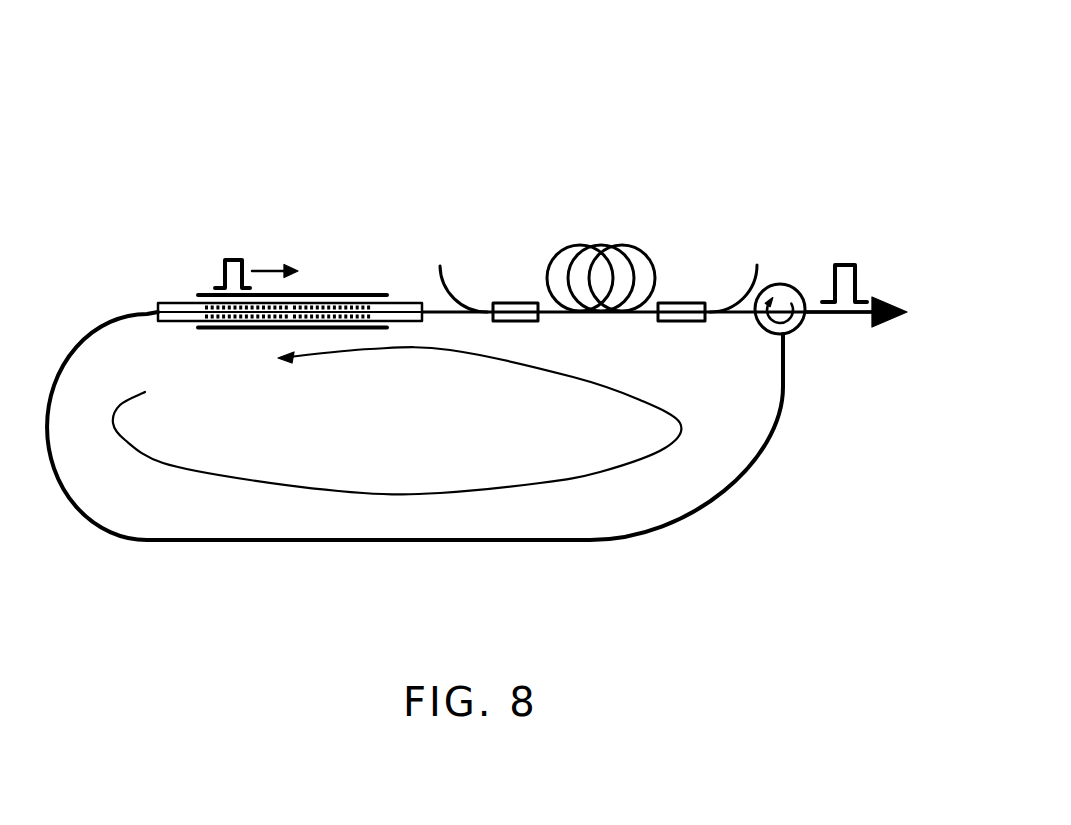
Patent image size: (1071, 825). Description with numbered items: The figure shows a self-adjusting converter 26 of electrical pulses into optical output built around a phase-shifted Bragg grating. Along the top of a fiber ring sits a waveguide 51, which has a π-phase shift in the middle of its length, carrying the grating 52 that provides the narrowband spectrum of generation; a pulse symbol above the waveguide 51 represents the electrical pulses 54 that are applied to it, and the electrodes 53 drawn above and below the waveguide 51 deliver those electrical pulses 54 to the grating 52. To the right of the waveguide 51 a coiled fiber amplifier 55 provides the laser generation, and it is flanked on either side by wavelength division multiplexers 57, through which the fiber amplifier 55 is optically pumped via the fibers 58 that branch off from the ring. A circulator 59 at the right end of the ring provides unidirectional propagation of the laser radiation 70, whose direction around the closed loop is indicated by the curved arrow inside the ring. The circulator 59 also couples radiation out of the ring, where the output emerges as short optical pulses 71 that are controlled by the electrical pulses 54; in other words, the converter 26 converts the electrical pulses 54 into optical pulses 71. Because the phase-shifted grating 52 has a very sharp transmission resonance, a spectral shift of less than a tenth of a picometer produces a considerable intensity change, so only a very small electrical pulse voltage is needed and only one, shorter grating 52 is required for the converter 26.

The converter 26 is at (283, 83).
The waveguide 51 is at (162, 294).
The grating 52 is at (361, 292).
The electrodes 53 is at (188, 296).
The electrical pulses 54 is at (255, 259).
The fiber amplifier 55 is at (649, 235).
The wavelength division multiplexers 57 is at (518, 289).
The fibers 58 is at (456, 244).
The circulator 59 is at (805, 278).
The laser radiation 70 is at (397, 420).
The optical pulses 71 is at (871, 295).